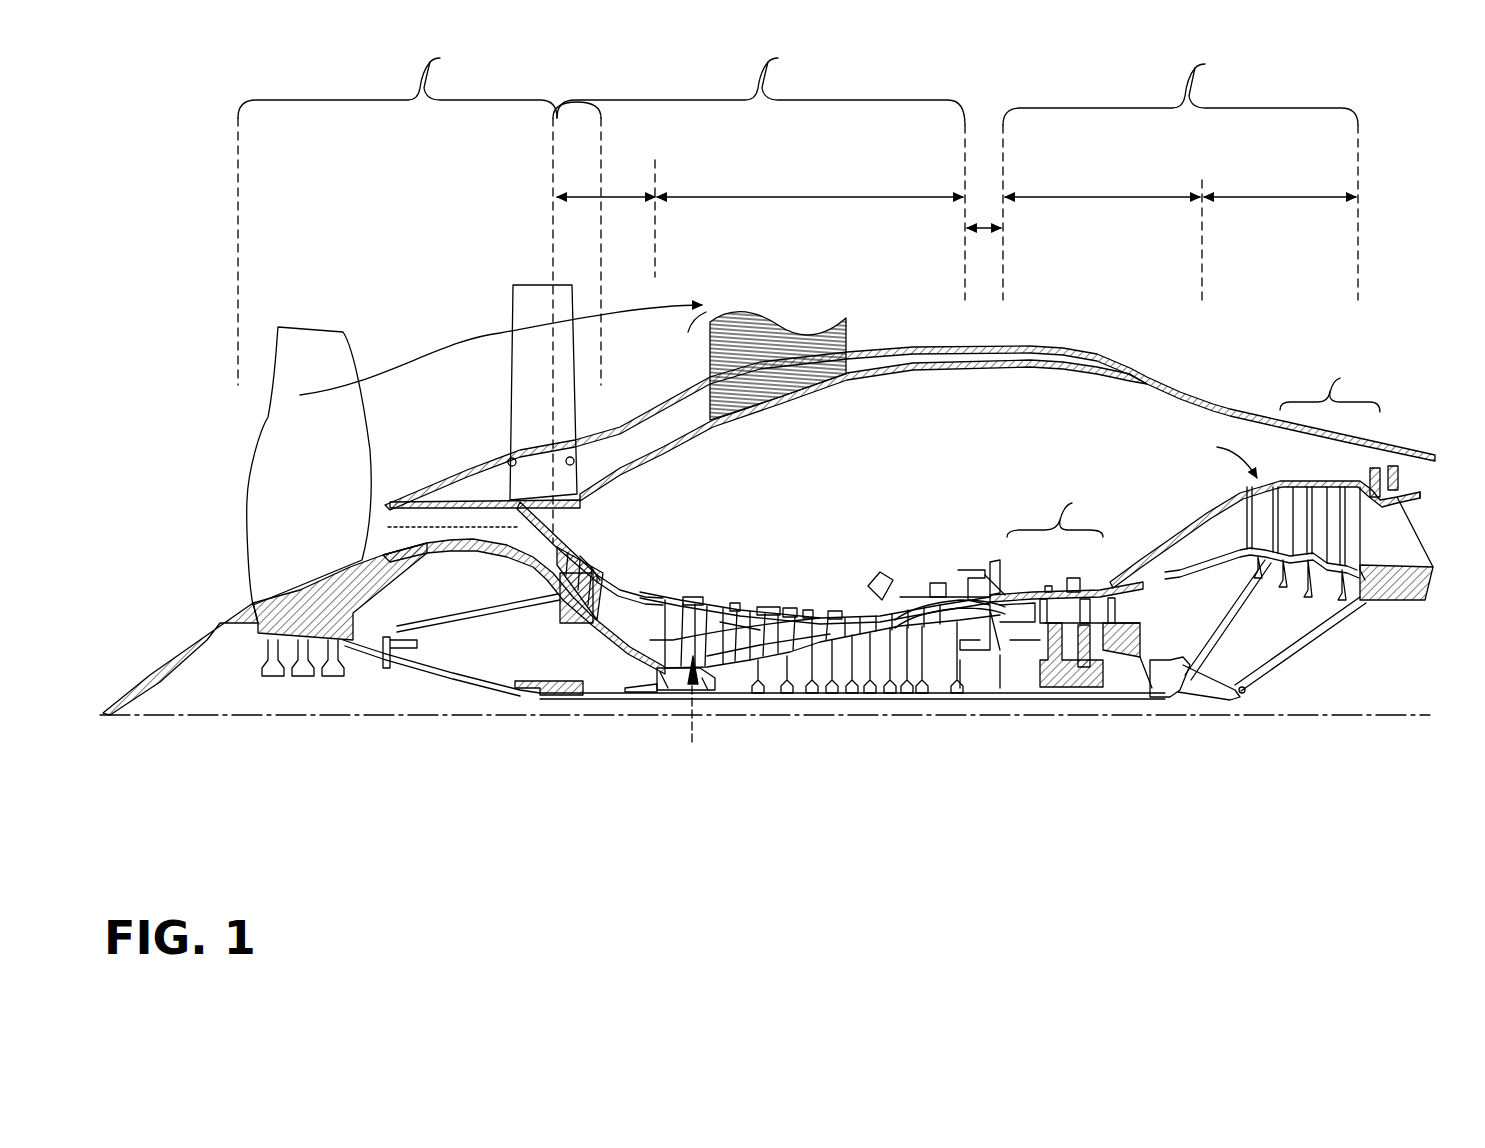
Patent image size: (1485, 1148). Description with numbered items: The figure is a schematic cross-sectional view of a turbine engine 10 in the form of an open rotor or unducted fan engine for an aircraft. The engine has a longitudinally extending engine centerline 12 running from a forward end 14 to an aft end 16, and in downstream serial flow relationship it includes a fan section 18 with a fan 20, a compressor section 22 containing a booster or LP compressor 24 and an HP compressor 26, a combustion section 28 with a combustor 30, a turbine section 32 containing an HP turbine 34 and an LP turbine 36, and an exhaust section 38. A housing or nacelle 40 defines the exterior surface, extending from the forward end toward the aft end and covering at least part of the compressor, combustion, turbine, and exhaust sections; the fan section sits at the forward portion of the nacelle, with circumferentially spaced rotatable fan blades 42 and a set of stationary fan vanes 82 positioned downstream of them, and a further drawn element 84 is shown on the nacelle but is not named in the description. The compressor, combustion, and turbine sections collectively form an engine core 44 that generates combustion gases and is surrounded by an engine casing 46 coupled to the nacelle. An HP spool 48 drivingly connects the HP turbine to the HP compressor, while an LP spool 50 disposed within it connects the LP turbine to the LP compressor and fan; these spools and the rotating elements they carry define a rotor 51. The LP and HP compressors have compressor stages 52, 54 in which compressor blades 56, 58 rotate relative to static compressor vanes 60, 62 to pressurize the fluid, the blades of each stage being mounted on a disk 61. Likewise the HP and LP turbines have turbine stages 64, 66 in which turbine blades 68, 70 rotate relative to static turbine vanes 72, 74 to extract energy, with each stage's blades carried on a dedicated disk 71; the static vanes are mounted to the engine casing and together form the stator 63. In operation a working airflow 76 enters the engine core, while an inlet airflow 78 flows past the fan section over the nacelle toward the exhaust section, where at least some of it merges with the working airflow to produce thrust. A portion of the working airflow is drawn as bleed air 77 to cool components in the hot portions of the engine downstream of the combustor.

The turbine engine 10 is at (1378, 224).
The engine centerline 12 is at (232, 718).
The forward end 14 is at (136, 426).
The aft end 16 is at (1460, 534).
The fan section 18 is at (397, 215).
The fan 20 is at (378, 305).
The compressor section 22 is at (761, 174).
The low pressure compressor 24 is at (592, 196).
The high pressure compressor 26 is at (797, 196).
The combustion section 28 is at (985, 229).
The combustor 30 is at (1005, 607).
The turbine section 32 is at (1180, 173).
The high pressure turbine 34 is at (1104, 196).
The low pressure turbine 36 is at (1278, 196).
The exhaust section 38 is at (1446, 466).
The nacelle 40 is at (1233, 410).
The set of fan blades 42 is at (320, 368).
The engine core 44 is at (918, 478).
The engine casing 46 is at (1187, 525).
The HP spool 48 is at (965, 690).
The LP spool 50 is at (555, 703).
The rotor 51 is at (1155, 662).
The compressor stages 52 is at (632, 512).
The compressor stages 54 is at (785, 580).
The compressor blades 56 is at (585, 558).
The compressor blades 58 is at (715, 606).
The static compressor vanes 60 is at (556, 548).
The disk 61 is at (712, 694).
The static compressor vanes 62 is at (690, 600).
The stator 63 is at (969, 600).
The turbine stages 64 is at (1066, 547).
The turbine stages 66 is at (1330, 389).
The turbine blades 68 is at (1058, 595).
The turbine blades 70 is at (1339, 494).
The disk 71 is at (1252, 568).
The static turbine vanes 72 is at (1043, 595).
The static turbine vanes 74 is at (1327, 497).
The working airflow 76 is at (552, 550).
The bleed air 77 is at (820, 585).
The inlet airflow 78 is at (497, 343).
The set of fan vanes 82 is at (508, 380).
The fan case structure 84 is at (778, 313).